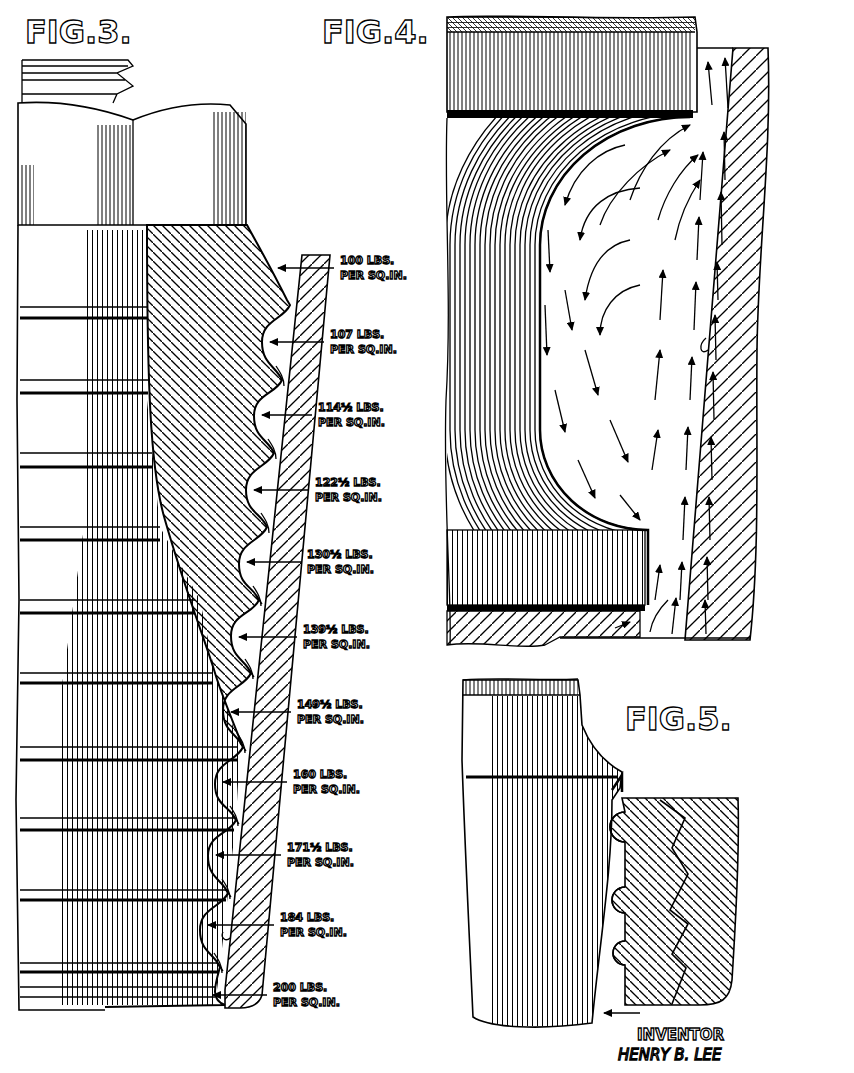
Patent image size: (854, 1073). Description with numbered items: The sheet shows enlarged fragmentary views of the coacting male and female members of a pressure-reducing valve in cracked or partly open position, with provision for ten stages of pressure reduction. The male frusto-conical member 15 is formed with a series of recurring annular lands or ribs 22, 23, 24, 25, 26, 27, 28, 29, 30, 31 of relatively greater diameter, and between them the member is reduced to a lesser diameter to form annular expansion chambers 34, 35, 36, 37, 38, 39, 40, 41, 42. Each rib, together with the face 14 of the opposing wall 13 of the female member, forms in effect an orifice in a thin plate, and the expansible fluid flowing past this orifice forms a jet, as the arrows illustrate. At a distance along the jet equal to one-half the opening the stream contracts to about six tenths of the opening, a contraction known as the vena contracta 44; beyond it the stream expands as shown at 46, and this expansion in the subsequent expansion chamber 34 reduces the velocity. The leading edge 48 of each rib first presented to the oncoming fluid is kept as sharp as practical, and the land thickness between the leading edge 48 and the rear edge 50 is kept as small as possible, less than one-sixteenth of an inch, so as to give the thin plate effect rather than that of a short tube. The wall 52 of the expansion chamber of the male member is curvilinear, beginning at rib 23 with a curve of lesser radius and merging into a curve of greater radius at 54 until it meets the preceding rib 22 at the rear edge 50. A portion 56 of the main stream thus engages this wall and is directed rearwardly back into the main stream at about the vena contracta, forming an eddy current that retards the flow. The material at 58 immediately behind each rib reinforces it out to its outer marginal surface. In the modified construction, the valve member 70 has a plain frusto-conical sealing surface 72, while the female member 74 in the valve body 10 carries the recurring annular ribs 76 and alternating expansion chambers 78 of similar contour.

In FIG. 5, the valve body 10 is at (724, 904).
In FIG. 3, the wall 13 is at (240, 1010).
In FIG. 4, the wall 13 is at (728, 424).
In FIG. 3, the face of the wall 14 is at (230, 938).
In FIG. 4, the face of the wall 14 is at (708, 350).
In FIG. 3, the male frusto-conical member 15 is at (203, 275).
In FIG. 3, the rib 22 is at (219, 973).
In FIG. 4, the rib 22 is at (605, 583).
In FIG. 3, the rib 23 is at (227, 900).
In FIG. 4, the rib 23 is at (700, 52).
In FIG. 3, the rib 24 is at (234, 826).
In FIG. 3, the rib 25 is at (241, 755).
In FIG. 3, the rib 26 is at (250, 680).
In FIG. 3, the rib 27 is at (260, 604).
In FIG. 3, the rib 28 is at (34, 533).
In FIG. 3, the rib 29 is at (32, 462).
In FIG. 3, the rib 30 is at (54, 385).
In FIG. 3, the rib 31 is at (56, 316).
In FIG. 3, the annular expansion chamber 34 is at (218, 946).
In FIG. 3, the annular expansion chamber 35 is at (225, 872).
In FIG. 3, the annular expansion chamber 36 is at (233, 800).
In FIG. 3, the annular expansion chamber 37 is at (240, 725).
In FIG. 3, the annular expansion chamber 38 is at (249, 650).
In FIG. 3, the annular expansion chamber 39 is at (257, 578).
In FIG. 3, the annular expansion chamber 40 is at (264, 506).
In FIG. 3, the annular expansion chamber 41 is at (271, 433).
In FIG. 3, the annular expansion chamber 42 is at (278, 358).
In FIG. 4, the vena contracta 44 is at (680, 530).
In FIG. 4, the expanding stream 46 is at (665, 228).
In FIG. 4, the leading edge 48 is at (644, 614).
In FIG. 5, the leading edge 48 is at (622, 964).
In FIG. 4, the rear edge 50 is at (652, 543).
In FIG. 5, the rear edge 50 is at (622, 928).
In FIG. 4, the wall of the expansion chamber 52 is at (540, 238).
In FIG. 5, the wall of the expansion chamber 52 is at (660, 891).
In FIG. 4, the curve of greater radius 54 is at (575, 420).
In FIG. 5, the curve of greater radius 54 is at (665, 936).
In FIG. 4, the returning portion of the main stream 56 is at (600, 268).
In FIG. 4, the reinforcing material 58 is at (575, 485).
In FIG. 5, the valve member 70 is at (543, 1003).
In FIG. 5, the frusto-conical sealing surface 72 is at (633, 1013).
In FIG. 5, the female member 74 is at (658, 812).
In FIG. 5, the annular rib 76 is at (628, 806).
In FIG. 5, the expansion chamber 78 is at (670, 832).